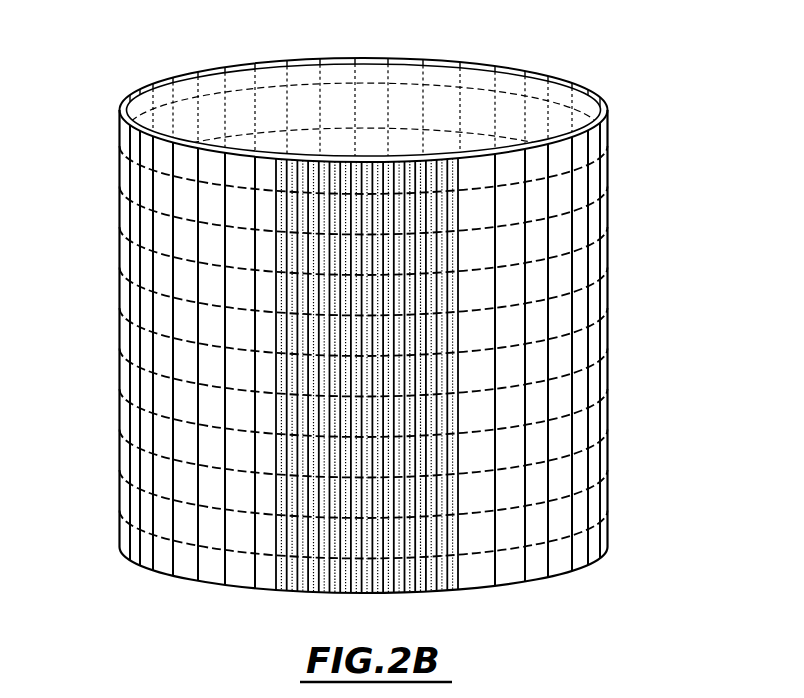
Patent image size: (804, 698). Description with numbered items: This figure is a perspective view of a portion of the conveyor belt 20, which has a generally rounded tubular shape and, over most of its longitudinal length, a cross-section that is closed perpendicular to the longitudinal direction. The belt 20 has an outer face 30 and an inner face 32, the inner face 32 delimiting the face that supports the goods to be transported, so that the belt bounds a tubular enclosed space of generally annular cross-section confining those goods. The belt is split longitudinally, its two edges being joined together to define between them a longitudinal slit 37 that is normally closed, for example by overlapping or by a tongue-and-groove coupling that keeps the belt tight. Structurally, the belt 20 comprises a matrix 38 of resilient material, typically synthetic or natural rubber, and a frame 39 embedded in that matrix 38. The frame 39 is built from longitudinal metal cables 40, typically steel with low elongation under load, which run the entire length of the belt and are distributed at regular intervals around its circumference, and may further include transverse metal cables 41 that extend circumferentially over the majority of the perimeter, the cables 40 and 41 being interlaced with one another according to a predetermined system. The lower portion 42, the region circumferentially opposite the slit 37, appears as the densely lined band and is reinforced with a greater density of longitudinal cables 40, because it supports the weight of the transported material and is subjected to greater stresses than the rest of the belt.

The belt 20 is at (92, 369).
The outer face 30 is at (577, 187).
The inner face 32 is at (508, 108).
The longitudinal slit 37 is at (368, 60).
The matrix 38 is at (590, 107).
The frame 39 is at (570, 243).
The longitudinal metal cables 40 is at (572, 353).
The transverse metal cables 41 is at (535, 543).
The lower portion 42 is at (320, 568).